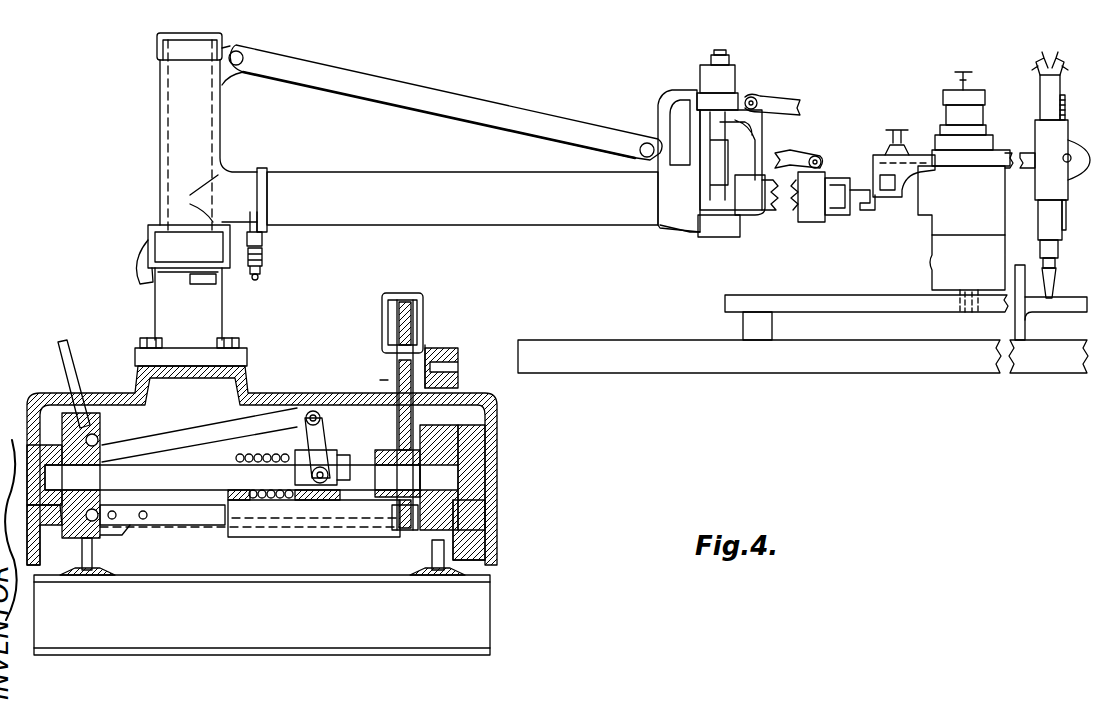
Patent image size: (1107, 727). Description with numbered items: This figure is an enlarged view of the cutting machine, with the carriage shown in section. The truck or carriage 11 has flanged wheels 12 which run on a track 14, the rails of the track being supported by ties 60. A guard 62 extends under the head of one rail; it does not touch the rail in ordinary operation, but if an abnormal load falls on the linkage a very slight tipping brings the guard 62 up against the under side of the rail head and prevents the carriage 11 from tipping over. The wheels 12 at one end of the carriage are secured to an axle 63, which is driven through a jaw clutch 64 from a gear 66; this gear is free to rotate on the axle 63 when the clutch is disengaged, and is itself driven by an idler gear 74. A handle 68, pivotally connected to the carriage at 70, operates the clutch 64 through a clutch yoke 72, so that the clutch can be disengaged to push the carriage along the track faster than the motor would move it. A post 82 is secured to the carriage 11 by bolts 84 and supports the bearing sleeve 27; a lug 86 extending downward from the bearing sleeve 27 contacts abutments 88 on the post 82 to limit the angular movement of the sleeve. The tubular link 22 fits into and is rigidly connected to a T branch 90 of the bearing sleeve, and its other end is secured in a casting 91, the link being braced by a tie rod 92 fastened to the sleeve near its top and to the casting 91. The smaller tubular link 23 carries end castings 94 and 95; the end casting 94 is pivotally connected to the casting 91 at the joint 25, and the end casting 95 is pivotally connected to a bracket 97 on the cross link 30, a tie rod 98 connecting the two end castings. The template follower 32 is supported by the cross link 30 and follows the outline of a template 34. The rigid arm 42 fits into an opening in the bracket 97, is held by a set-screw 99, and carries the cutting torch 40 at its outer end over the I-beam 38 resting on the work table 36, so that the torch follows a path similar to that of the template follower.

The carriage 11 is at (498, 474).
The flanged wheels 12 is at (100, 430).
The track 14 is at (98, 578).
The link 22 is at (479, 236).
The link 23 is at (789, 226).
The pivotal connection 25 is at (698, 247).
The bearing sleeve 27 is at (158, 128).
The cross link 30 is at (885, 175).
The template follower 32 is at (932, 266).
The template 34 is at (810, 302).
The work table 36 is at (1035, 356).
The I-beam 38 is at (1015, 322).
The cutting torch 40 is at (1040, 100).
The rigid arm 42 is at (1000, 158).
The ties 60 is at (262, 615).
The guard 62 is at (122, 532).
The axle 63 is at (232, 449).
The jaw clutch 64 is at (370, 515).
The gear 66 is at (396, 448).
The handle 68 is at (70, 358).
The pivotal connection 70 is at (306, 408).
The clutch yoke 72 is at (336, 412).
The idler gear 74 is at (410, 330).
The post 82 is at (168, 158).
The bolts 84 is at (143, 338).
The lug 86 is at (142, 258).
The abutments 88 is at (202, 284).
The T branch 90 is at (244, 182).
The casting 91 is at (678, 224).
The tie rod 92 is at (512, 120).
The end casting 94 is at (752, 218).
The end casting 95 is at (822, 206).
The bracket 97 is at (870, 212).
The tie rod 98 is at (790, 152).
The set-screw 99 is at (898, 128).